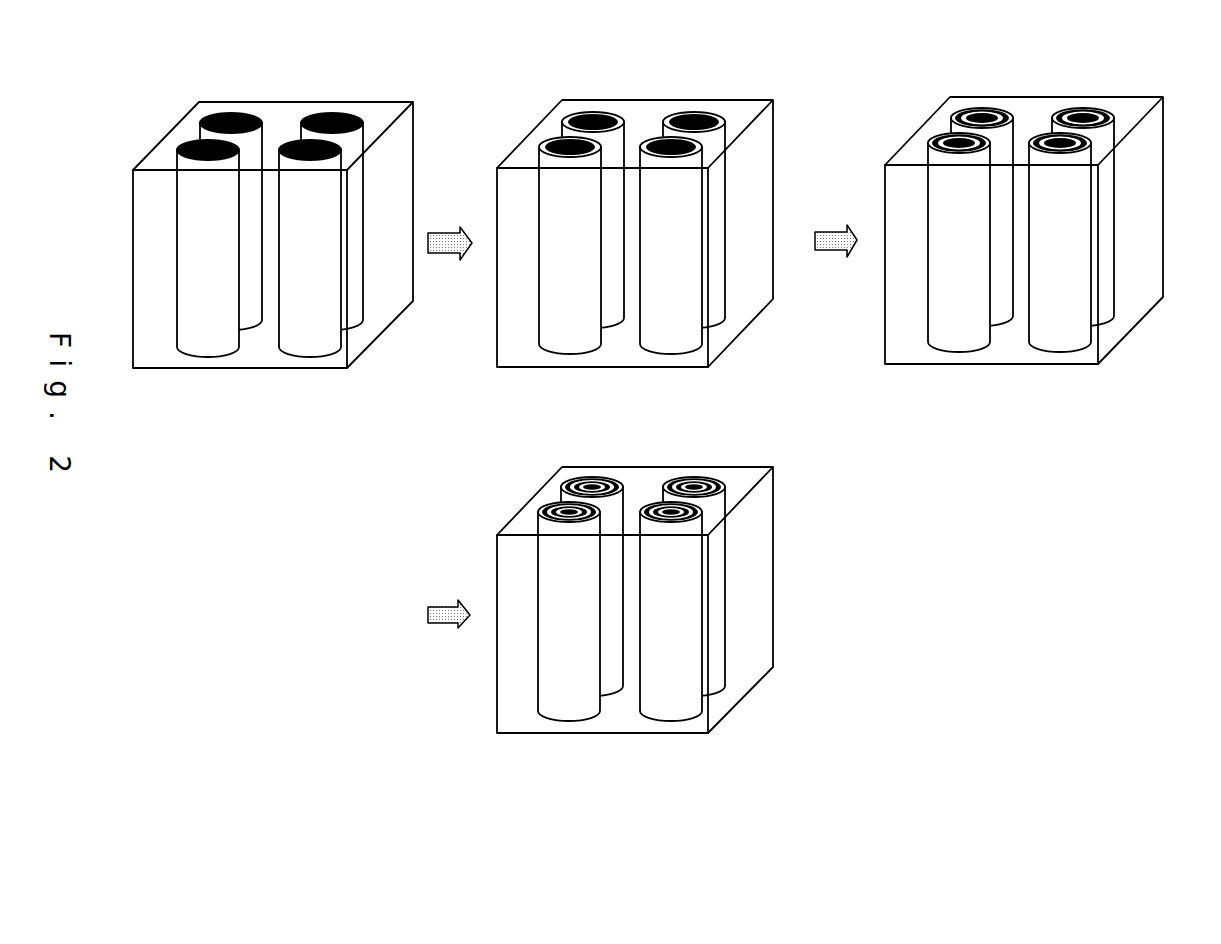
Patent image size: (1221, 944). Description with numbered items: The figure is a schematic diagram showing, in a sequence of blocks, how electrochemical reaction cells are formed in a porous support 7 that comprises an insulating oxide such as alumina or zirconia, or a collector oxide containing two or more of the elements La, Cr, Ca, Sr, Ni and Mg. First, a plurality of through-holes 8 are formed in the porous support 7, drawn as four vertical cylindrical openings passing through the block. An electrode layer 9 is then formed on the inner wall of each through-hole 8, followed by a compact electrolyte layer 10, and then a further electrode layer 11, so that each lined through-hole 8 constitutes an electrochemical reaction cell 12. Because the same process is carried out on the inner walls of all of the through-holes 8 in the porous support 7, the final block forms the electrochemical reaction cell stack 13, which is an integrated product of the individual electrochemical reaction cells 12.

The porous support 7 is at (273, 228).
The through-holes 8 is at (307, 73).
The electrode layer 9 is at (672, 75).
The compact electrolyte layer 10 is at (1043, 65).
The electrode layer 11 is at (655, 452).
The electrochemical reaction cell 12 is at (572, 464).
The electrochemical reaction cell stack 13 is at (617, 610).